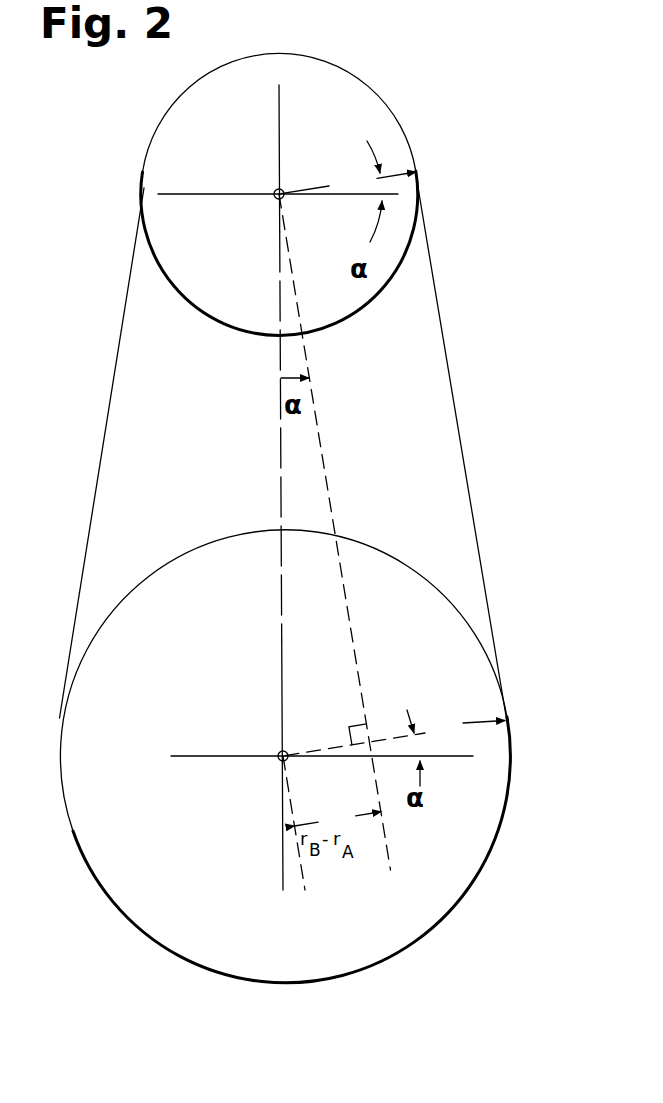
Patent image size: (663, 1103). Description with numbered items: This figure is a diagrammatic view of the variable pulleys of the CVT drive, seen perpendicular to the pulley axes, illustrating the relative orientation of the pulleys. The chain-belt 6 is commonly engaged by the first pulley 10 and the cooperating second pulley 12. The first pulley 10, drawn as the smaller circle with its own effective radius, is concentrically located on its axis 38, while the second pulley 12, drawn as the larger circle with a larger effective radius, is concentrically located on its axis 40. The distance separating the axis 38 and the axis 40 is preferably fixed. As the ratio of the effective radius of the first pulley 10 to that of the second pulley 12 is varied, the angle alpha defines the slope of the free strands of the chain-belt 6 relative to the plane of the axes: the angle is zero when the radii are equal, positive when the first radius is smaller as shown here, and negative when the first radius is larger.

The chain-belt 6 is at (452, 420).
The first pulley 10 is at (385, 247).
The second pulley 12 is at (465, 820).
The axis 38 is at (281, 192).
The axis 40 is at (285, 752).